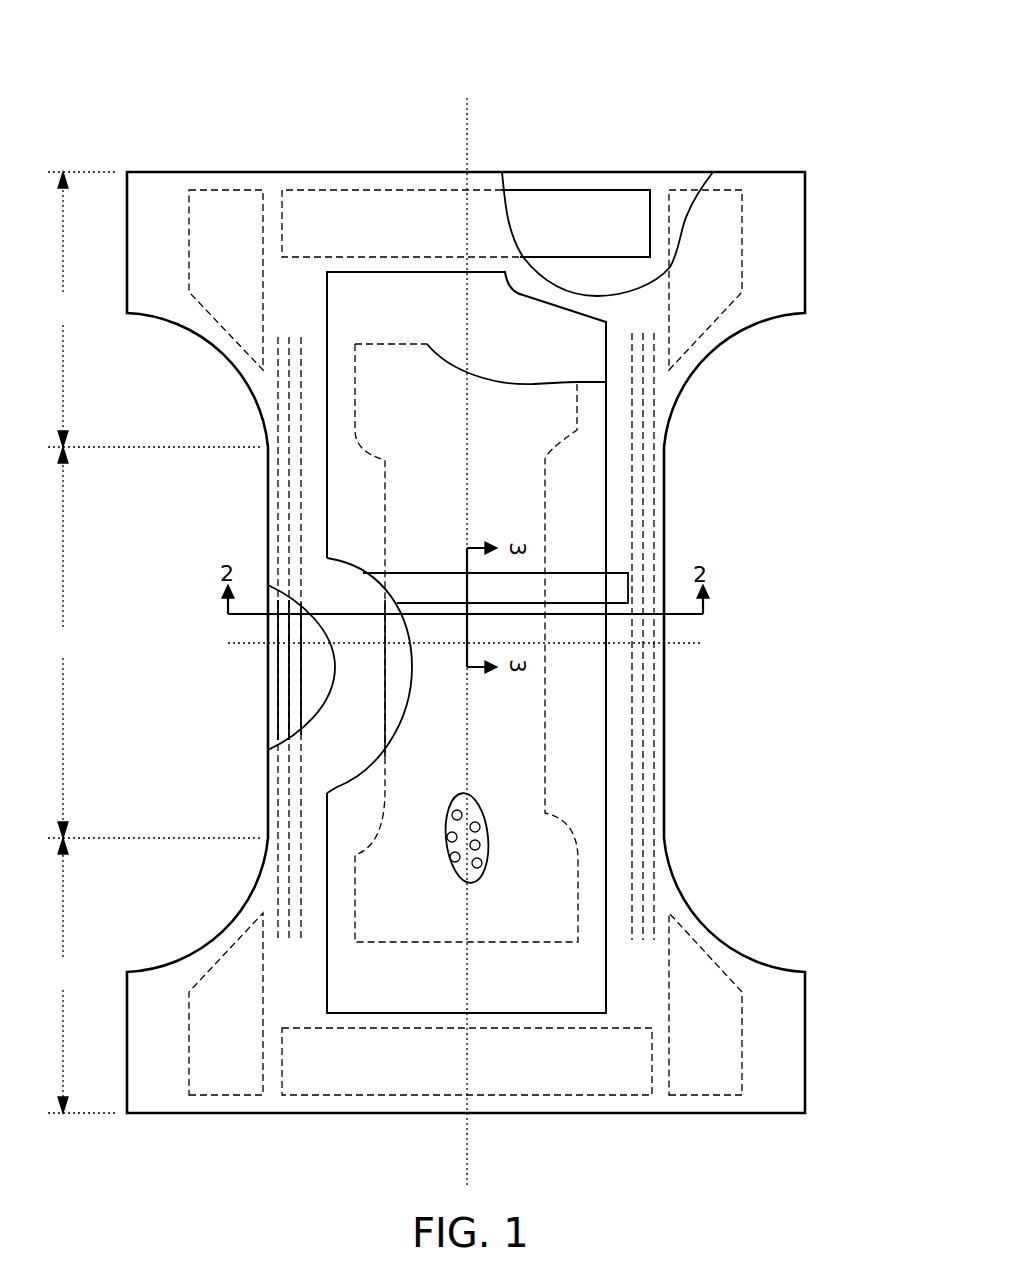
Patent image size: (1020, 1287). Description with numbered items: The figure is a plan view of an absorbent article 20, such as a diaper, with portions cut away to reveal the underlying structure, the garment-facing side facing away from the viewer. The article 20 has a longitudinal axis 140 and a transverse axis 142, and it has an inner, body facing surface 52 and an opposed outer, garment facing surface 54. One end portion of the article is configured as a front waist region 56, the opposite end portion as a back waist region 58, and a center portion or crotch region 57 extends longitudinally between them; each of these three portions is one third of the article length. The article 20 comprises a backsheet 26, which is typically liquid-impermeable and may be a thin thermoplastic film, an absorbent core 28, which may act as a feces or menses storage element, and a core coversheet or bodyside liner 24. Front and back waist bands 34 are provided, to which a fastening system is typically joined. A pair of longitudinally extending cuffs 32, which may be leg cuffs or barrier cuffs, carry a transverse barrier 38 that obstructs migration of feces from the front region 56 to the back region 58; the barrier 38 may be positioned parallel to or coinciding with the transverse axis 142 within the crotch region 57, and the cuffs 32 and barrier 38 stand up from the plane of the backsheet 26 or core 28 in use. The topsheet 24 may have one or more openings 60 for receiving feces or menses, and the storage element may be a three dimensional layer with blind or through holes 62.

The absorbent article 20 is at (700, 90).
The longitudinal axis 140 is at (468, 135).
The transverse axis 142 is at (685, 645).
The core coversheet or bodyside liner 24 is at (412, 323).
The backsheet 26 is at (525, 326).
The absorbent core 28 is at (402, 717).
The longitudinally extending cuffs 32 is at (648, 587).
The waist band 34 is at (324, 210).
The transverse barrier 38 is at (615, 580).
The inner, body facing surface 52 is at (592, 503).
The outer, garment facing surface 54 is at (338, 503).
The front waist region 56 is at (155, 309).
The center portion or crotch region 57 is at (63, 642).
The back waist region 58 is at (155, 975).
The openings 60 is at (487, 850).
The three dimensional holes 62 is at (487, 827).